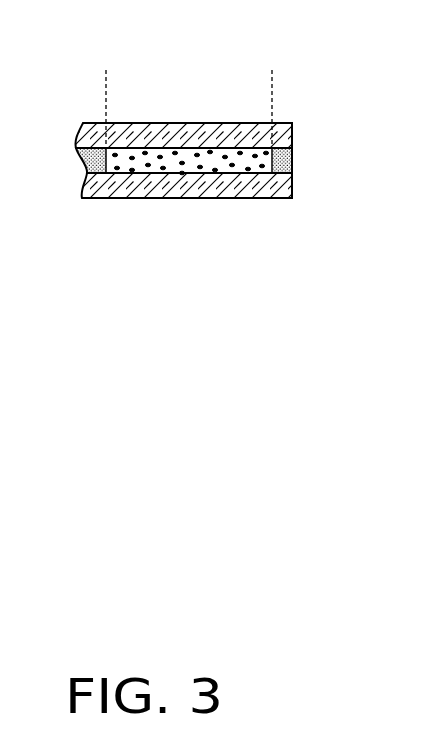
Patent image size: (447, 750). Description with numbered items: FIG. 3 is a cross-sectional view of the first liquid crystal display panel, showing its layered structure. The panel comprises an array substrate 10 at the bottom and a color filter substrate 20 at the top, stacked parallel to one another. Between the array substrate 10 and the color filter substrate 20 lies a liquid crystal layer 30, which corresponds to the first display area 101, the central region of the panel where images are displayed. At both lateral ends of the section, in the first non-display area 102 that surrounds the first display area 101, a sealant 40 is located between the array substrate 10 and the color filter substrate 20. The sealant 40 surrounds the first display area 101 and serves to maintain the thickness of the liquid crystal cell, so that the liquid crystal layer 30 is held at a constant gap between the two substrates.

The array substrate 10 is at (283, 185).
The color filter substrate 20 is at (280, 138).
The liquid crystal layer 30 is at (237, 167).
The sealant 40 is at (280, 165).
The first display area 101 is at (197, 100).
The first non-display area 102 is at (93, 100).